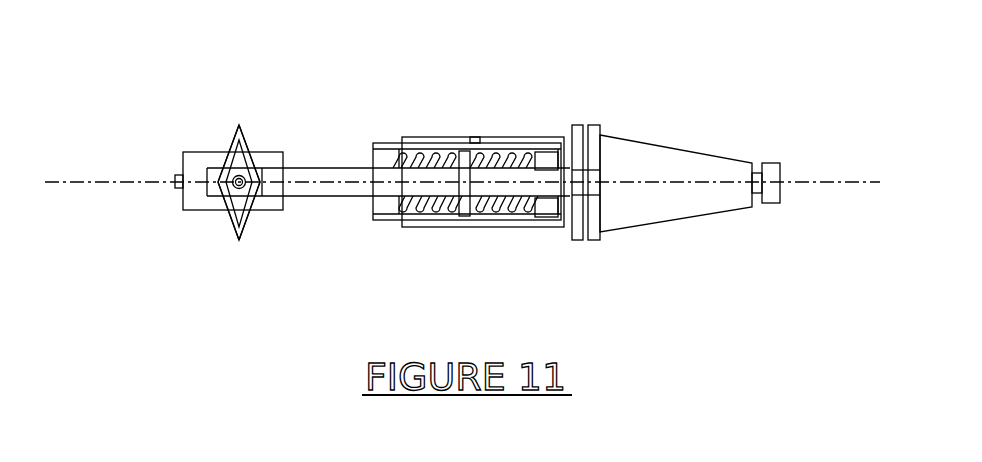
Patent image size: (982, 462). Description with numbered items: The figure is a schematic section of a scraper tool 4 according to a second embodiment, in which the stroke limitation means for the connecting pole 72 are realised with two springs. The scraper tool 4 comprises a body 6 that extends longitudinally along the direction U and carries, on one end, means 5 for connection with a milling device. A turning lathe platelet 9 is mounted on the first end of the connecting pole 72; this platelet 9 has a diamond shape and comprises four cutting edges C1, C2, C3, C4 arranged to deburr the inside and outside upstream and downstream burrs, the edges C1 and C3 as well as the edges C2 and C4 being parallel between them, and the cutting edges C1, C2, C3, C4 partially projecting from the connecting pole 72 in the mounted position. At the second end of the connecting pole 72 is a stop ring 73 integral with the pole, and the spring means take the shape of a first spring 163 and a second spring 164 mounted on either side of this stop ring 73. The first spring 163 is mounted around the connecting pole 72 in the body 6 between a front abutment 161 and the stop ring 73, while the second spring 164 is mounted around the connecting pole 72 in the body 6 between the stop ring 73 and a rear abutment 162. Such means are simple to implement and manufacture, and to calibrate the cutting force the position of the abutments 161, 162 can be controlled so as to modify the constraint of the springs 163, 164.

The scraper tool 4 is at (578, 283).
The means for connection 5 is at (732, 172).
The body 6 is at (427, 224).
The turning lathe platelet 9 is at (222, 218).
The connecting pole 72 is at (325, 175).
The stop ring 73 is at (465, 167).
The front abutment 161 is at (378, 208).
The rear abutment 162 is at (548, 158).
The first spring 163 is at (437, 153).
The second spring 164 is at (488, 209).
The cutting edge C1 is at (230, 148).
The cutting edge C2 is at (248, 148).
The cutting edge C3 is at (248, 220).
The cutting edge C4 is at (228, 222).